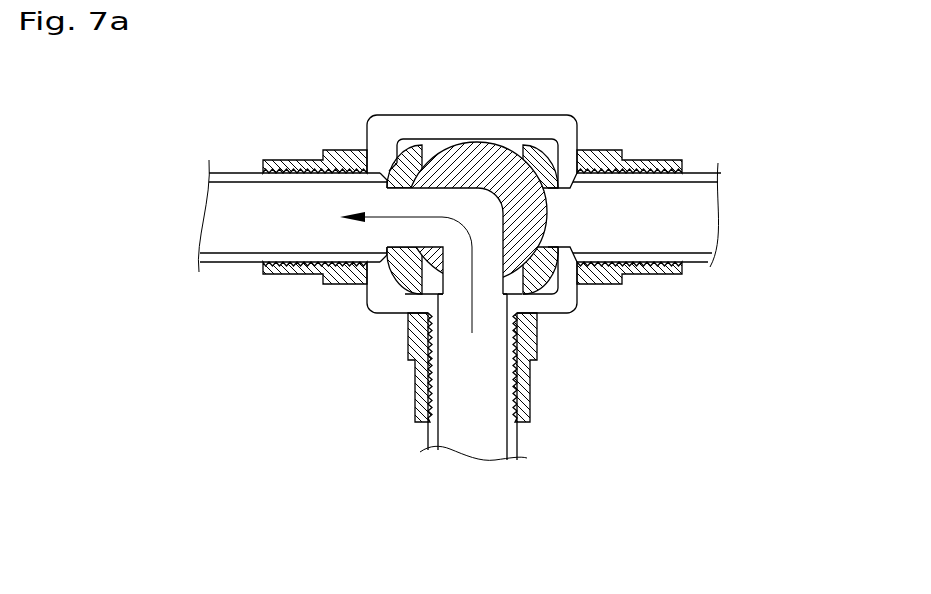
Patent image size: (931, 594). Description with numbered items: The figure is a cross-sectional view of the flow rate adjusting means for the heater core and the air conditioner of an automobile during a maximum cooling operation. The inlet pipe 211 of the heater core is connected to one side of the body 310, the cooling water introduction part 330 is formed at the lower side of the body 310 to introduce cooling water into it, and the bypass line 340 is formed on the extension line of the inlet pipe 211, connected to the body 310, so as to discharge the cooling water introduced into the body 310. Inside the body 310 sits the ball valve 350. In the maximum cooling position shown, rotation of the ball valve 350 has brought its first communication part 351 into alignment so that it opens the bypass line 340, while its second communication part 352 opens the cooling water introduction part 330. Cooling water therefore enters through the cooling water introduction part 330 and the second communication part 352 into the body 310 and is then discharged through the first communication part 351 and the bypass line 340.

The bypass line 340 is at (220, 218).
The inlet pipe 211 is at (693, 220).
The cooling water introduction part 330 is at (470, 436).
The body 310 is at (368, 310).
The ball valve 350 is at (472, 148).
The first communication part 351 is at (410, 207).
The second communication part 352 is at (480, 282).